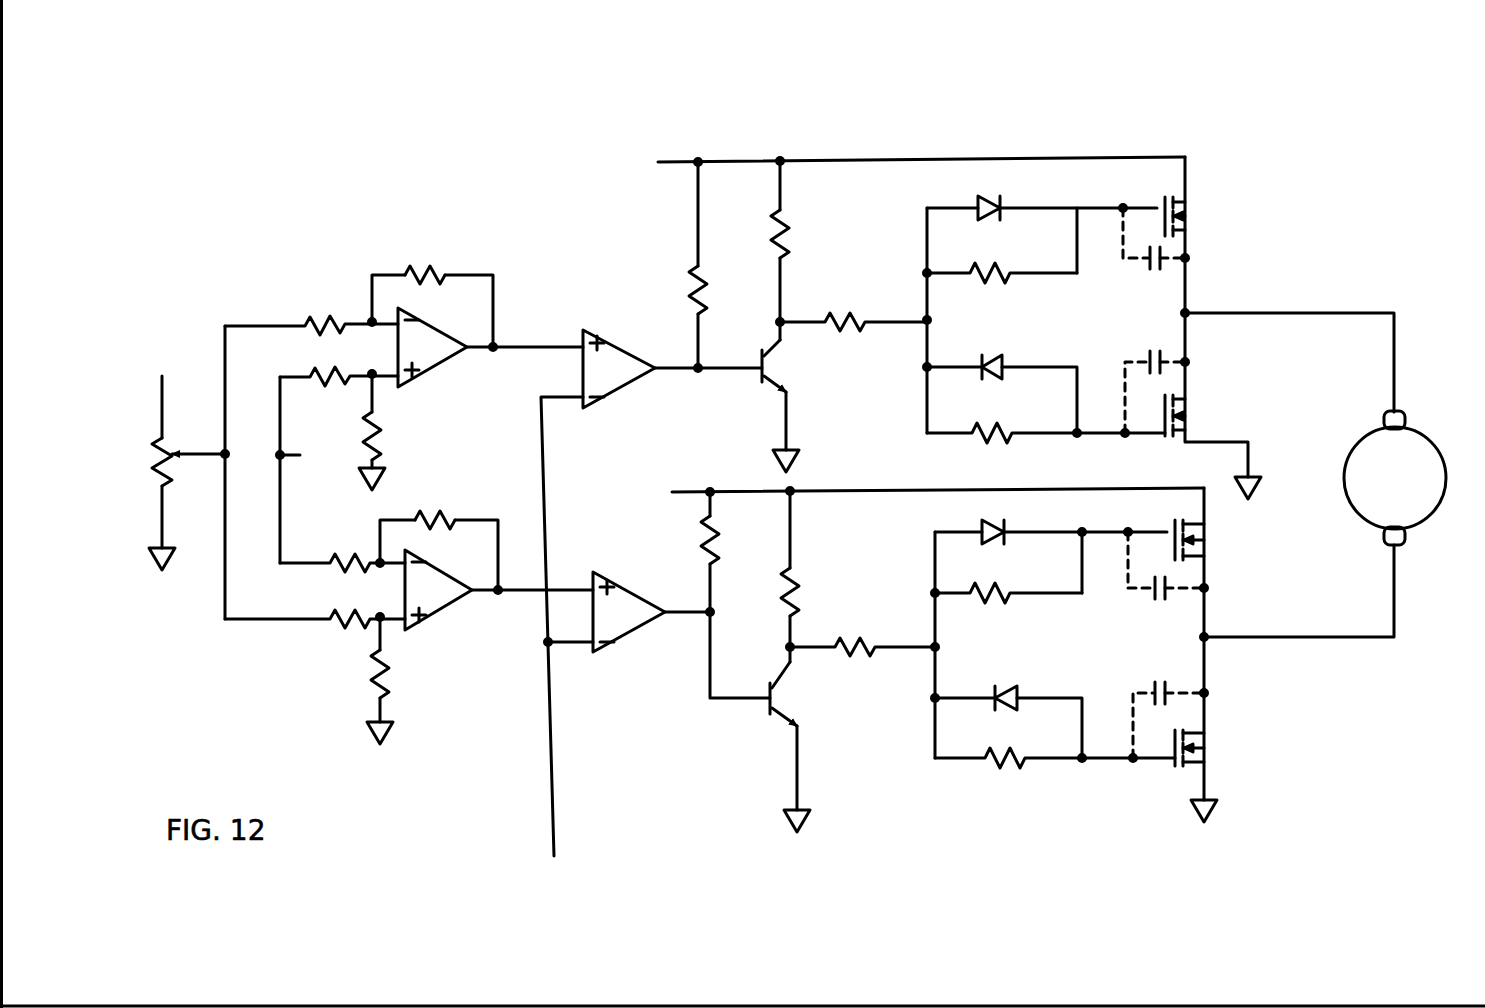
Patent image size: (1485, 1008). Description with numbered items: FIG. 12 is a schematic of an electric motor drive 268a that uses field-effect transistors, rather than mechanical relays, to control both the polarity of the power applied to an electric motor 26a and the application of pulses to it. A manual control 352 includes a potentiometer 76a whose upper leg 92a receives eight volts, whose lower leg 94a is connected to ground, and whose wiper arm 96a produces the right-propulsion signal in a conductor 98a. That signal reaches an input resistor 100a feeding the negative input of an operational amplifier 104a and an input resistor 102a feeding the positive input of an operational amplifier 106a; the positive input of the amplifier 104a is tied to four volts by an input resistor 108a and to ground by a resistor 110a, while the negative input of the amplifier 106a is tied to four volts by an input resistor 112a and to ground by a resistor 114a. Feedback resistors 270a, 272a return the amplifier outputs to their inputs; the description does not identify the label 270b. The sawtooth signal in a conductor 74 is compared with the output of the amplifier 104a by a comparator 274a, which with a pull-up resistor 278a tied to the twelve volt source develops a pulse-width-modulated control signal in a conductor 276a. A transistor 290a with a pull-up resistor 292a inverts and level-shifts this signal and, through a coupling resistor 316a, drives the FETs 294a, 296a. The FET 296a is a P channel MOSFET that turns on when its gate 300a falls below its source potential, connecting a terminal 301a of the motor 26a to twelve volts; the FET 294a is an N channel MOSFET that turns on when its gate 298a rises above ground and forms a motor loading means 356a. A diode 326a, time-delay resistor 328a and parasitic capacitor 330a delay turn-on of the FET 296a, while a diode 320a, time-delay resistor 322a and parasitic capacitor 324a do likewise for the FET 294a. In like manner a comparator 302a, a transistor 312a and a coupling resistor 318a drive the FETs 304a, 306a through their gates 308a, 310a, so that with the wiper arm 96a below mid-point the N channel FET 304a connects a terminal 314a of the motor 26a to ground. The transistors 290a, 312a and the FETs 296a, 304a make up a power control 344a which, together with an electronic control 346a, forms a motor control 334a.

The manual control 352 is at (188, 192).
The upper leg 92a is at (162, 446).
The lower leg 94a is at (166, 486).
The wiper arm 96a is at (200, 461).
The potentiometer 76a is at (185, 612).
The first comparator stage 270b is at (455, 182).
The conductor 98a is at (274, 322).
The input resistor 100a is at (320, 314).
The input resistor 108a is at (326, 372).
The resistor 110a is at (391, 412).
The operational amplifier 104a is at (420, 367).
The feedback resistor 270a is at (414, 266).
The electric motor drive 268a is at (467, 742).
The input resistor 112a is at (346, 572).
The input resistor 102a is at (368, 630).
The resistor 114a is at (372, 676).
The operational amplifier 106a is at (424, 612).
The feedback resistor 272a is at (422, 510).
The conductor 74 is at (550, 824).
The electronic control 346a is at (566, 100).
The comparator 274a is at (638, 338).
The conductor 276a is at (670, 374).
The pull-up resistor 278a is at (682, 276).
The motor control 334a is at (780, 98).
The pull-up resistor 292a is at (790, 234).
The transistor 290a is at (766, 379).
The coupling resistor 316a is at (878, 320).
The comparator 302a is at (650, 634).
The transistor 312a is at (770, 713).
The coupling resistor 318a is at (900, 640).
The power control 344a is at (1062, 86).
The diode 326a is at (988, 196).
The time-delay resistor 328a is at (1016, 266).
The diode 320a is at (958, 385).
The time-delay resistor 322a is at (984, 442).
The parasitic capacitor 330a is at (1146, 262).
The parasitic capacitor 324a is at (1142, 360).
The FET 296a is at (1216, 188).
The gate 300a is at (1128, 182).
The motor loading means 356a is at (1220, 288).
The FET 294a is at (1213, 388).
The gate 298a is at (1144, 434).
The gate 310a is at (1124, 524).
The FET 306a is at (1224, 568).
The gate 308a is at (1168, 770).
The FET 304a is at (1228, 720).
The electric motor 26a is at (1403, 302).
The terminal 301a is at (1384, 416).
The terminal 314a is at (1384, 536).